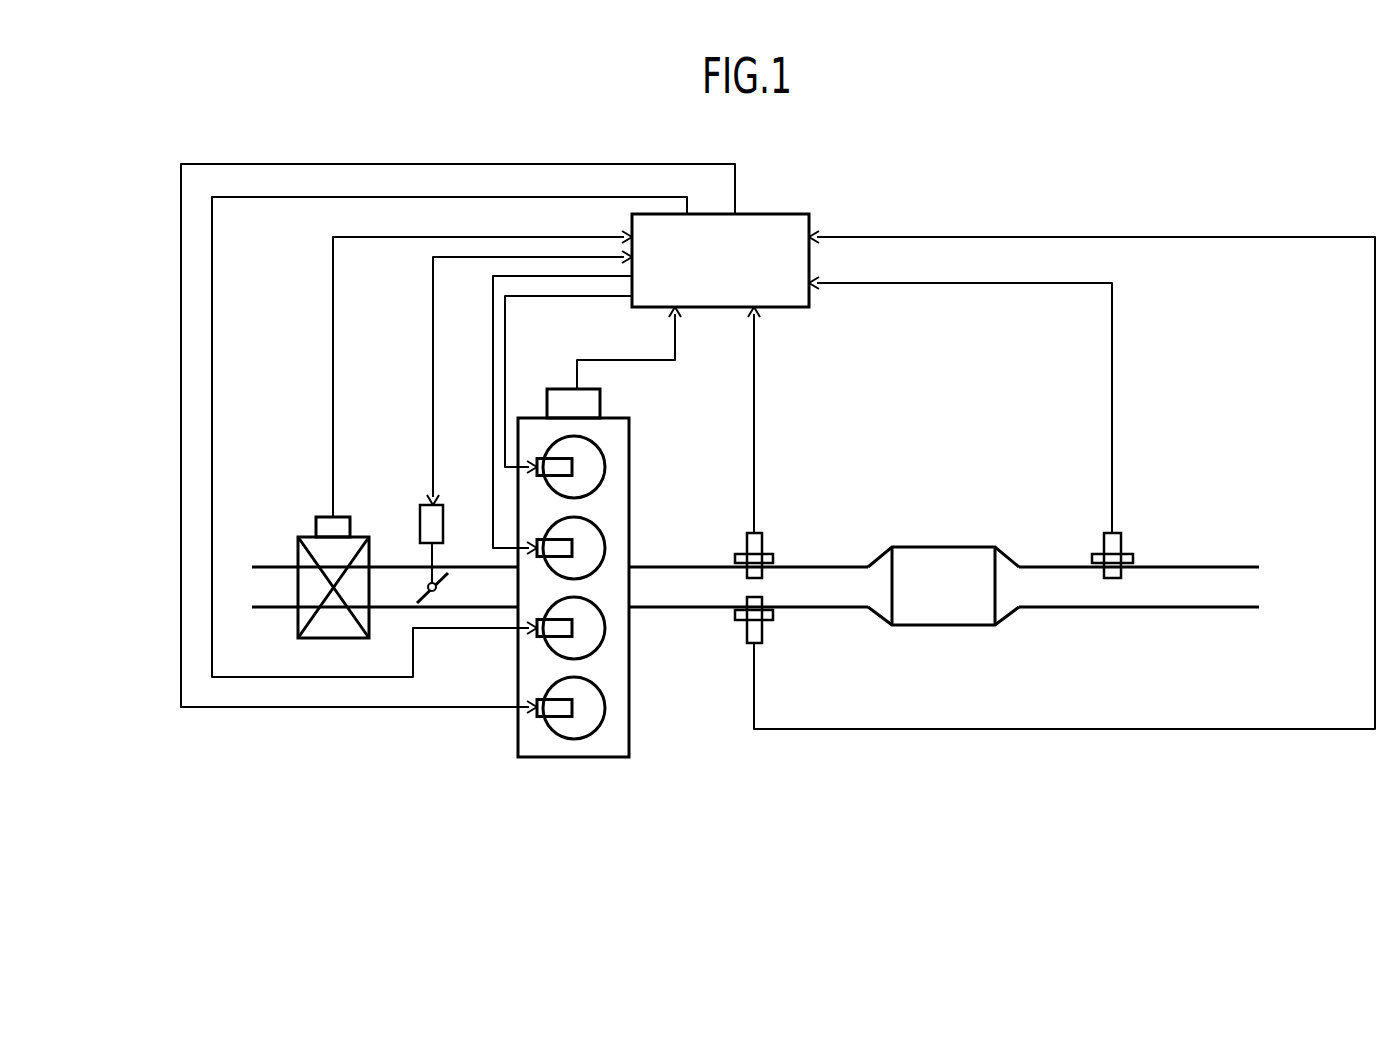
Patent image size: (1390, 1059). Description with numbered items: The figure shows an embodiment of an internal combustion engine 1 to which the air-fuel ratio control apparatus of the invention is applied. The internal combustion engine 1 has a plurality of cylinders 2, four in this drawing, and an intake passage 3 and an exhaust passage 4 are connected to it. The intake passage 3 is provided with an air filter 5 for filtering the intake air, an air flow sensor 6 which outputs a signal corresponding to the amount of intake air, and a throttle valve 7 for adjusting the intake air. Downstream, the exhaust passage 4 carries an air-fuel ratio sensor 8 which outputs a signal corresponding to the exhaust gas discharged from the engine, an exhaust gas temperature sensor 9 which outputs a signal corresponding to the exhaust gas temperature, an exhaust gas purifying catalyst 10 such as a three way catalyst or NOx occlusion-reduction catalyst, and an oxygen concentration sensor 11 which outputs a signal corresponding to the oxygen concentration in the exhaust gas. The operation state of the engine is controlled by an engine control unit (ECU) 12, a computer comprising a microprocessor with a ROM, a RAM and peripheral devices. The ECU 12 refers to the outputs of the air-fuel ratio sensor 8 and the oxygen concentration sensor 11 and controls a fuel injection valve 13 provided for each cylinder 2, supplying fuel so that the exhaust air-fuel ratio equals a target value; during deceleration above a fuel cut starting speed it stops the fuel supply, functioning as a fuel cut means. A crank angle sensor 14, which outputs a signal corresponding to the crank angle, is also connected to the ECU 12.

The internal combustion engine 1 is at (577, 757).
The cylinders 2 is at (600, 489).
The intake passage 3 is at (272, 566).
The exhaust passage 4 is at (1210, 566).
The air filter 5 is at (361, 537).
The air flow sensor 6 is at (317, 517).
The throttle valve 7 is at (418, 600).
The air-fuel ratio sensor 8 is at (762, 541).
The exhaust gas temperature sensor 9 is at (762, 633).
The exhaust gas purifying catalyst 10 is at (945, 547).
The oxygen concentration sensor 11 is at (1121, 541).
The engine control unit (ECU) 12 is at (770, 214).
The fuel injection valve 13 is at (541, 476).
The crank angle sensor 14 is at (600, 395).